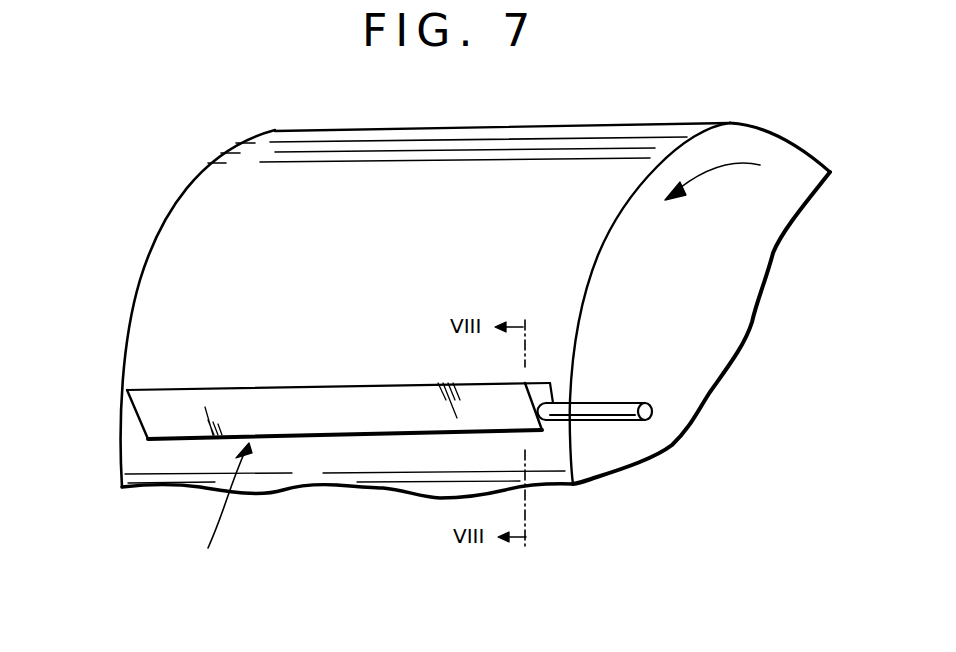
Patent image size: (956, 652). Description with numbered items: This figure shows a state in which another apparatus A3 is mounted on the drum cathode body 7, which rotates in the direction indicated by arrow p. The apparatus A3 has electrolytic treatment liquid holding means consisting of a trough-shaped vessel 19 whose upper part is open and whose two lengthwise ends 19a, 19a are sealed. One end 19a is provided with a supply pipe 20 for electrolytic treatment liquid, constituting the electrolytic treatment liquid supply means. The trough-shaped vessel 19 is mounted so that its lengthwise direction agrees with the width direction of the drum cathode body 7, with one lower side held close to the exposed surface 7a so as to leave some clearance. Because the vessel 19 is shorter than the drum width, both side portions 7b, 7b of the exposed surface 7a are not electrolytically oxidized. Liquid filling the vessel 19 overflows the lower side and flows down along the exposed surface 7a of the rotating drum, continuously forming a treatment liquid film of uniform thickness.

The drum cathode body 7 is at (148, 248).
The exposed surface 7a is at (343, 190).
The side portions 7b is at (130, 420).
The trough-shaped vessel 19 is at (335, 418).
The ends 19a is at (128, 408).
The supply pipe 20 is at (633, 402).
The apparatus A3 is at (217, 513).
The arrow p is at (712, 181).